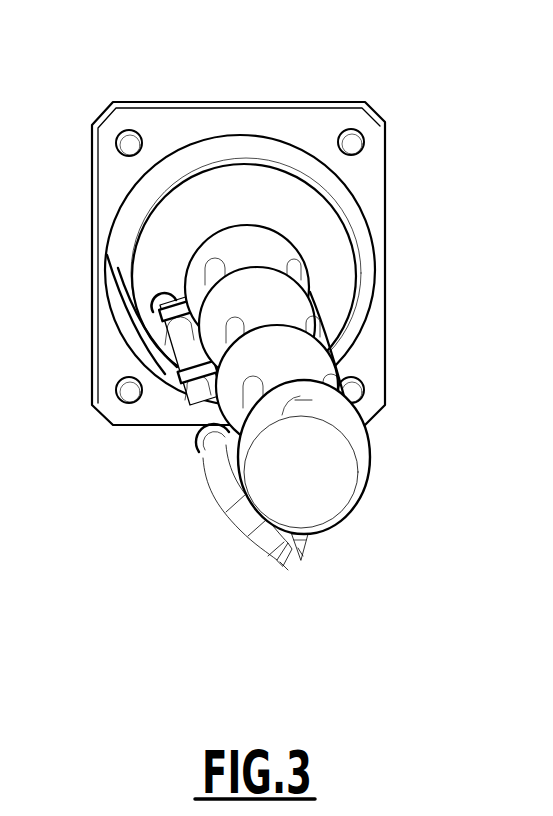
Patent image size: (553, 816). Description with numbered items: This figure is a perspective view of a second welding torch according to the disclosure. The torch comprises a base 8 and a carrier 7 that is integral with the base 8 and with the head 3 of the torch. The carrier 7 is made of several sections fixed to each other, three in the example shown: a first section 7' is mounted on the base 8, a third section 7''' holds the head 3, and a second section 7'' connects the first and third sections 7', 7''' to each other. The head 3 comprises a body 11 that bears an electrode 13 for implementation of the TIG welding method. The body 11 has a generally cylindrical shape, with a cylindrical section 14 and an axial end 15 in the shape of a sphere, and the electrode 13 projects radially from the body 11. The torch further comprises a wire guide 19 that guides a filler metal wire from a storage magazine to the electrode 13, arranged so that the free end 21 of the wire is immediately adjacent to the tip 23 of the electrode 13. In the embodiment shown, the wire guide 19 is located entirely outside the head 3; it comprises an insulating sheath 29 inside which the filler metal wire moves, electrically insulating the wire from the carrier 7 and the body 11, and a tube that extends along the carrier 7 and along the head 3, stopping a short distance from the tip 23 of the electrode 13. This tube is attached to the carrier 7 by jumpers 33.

The head 3 is at (406, 445).
The carrier 7 is at (393, 354).
The first section of the carrier 7' is at (329, 263).
The second section of the carrier 7'' is at (337, 305).
The third section of the carrier 7''' is at (356, 374).
The base 8 is at (302, 122).
The body 11 is at (390, 522).
The electrode 13 is at (343, 553).
The cylindrical section 14 is at (303, 407).
The axial end 15 is at (328, 487).
The wire guide 19 is at (164, 437).
The free end of the wire 21 is at (293, 565).
The tip of the electrode 23 is at (300, 550).
The insulating sheath 29 is at (180, 345).
The jumpers 33 is at (172, 378).